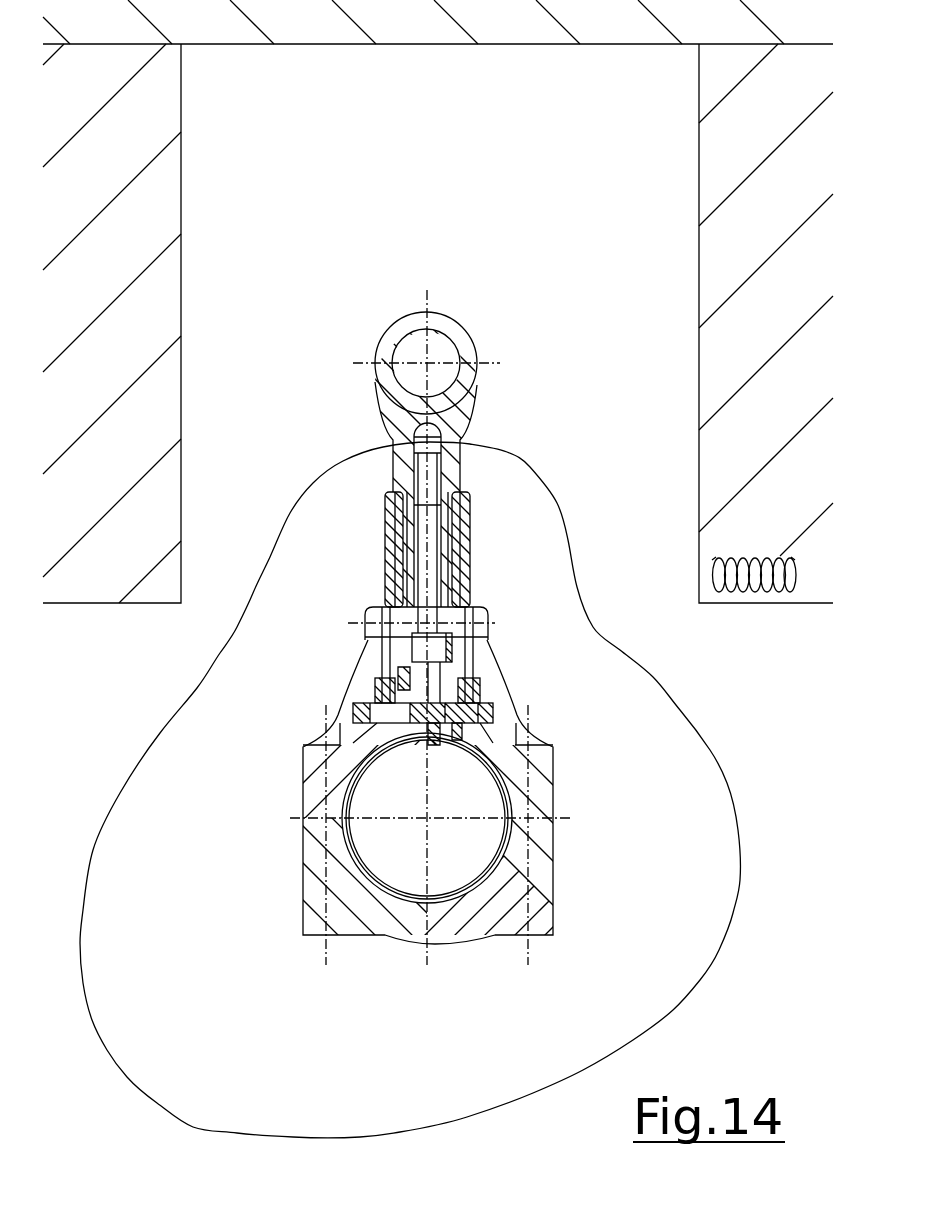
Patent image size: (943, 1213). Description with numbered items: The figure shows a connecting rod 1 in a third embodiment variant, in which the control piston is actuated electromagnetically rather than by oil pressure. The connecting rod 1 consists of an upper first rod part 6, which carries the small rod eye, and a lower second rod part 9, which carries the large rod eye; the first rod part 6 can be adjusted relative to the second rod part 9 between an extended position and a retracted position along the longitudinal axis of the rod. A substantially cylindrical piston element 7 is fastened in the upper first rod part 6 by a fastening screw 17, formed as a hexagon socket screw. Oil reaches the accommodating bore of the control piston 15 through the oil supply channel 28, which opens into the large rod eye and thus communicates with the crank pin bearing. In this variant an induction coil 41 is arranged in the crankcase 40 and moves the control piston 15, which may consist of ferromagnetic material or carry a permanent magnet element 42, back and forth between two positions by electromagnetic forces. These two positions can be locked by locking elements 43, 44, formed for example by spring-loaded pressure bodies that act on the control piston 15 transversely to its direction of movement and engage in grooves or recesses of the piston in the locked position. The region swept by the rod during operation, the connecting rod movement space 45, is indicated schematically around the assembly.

The connecting rod 1 is at (512, 493).
The first rod part 6 is at (468, 411).
The piston element 7 is at (367, 637).
The second rod part 9 is at (380, 662).
The control piston 15 is at (340, 787).
The fastening screw 17 is at (433, 592).
The oil supply channel 28 is at (350, 731).
The crankcase 40 is at (698, 357).
The induction coil 41 is at (733, 592).
The permanent magnet element 42 is at (480, 697).
The locking element 43 is at (437, 745).
The locking element 44 is at (458, 740).
The connecting rod movement space 45 is at (739, 823).